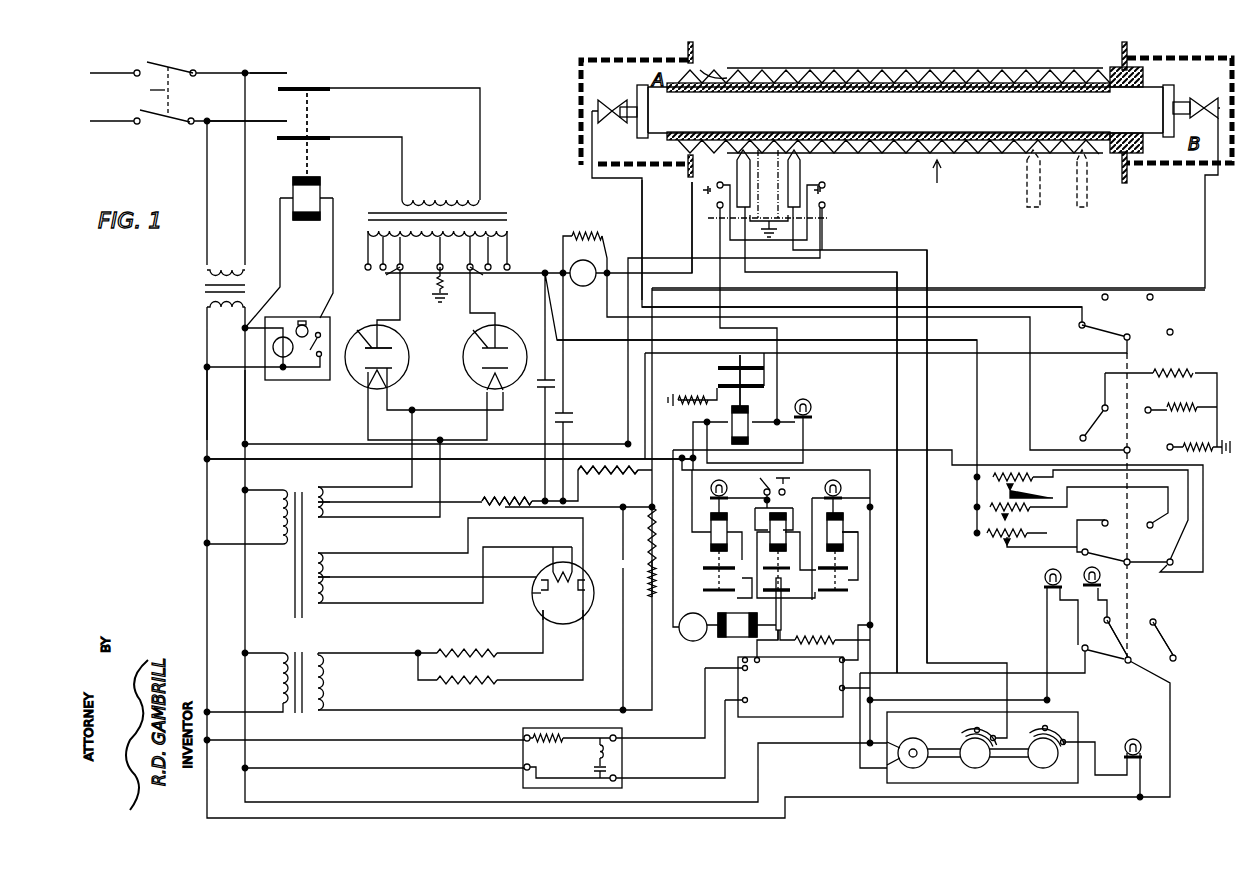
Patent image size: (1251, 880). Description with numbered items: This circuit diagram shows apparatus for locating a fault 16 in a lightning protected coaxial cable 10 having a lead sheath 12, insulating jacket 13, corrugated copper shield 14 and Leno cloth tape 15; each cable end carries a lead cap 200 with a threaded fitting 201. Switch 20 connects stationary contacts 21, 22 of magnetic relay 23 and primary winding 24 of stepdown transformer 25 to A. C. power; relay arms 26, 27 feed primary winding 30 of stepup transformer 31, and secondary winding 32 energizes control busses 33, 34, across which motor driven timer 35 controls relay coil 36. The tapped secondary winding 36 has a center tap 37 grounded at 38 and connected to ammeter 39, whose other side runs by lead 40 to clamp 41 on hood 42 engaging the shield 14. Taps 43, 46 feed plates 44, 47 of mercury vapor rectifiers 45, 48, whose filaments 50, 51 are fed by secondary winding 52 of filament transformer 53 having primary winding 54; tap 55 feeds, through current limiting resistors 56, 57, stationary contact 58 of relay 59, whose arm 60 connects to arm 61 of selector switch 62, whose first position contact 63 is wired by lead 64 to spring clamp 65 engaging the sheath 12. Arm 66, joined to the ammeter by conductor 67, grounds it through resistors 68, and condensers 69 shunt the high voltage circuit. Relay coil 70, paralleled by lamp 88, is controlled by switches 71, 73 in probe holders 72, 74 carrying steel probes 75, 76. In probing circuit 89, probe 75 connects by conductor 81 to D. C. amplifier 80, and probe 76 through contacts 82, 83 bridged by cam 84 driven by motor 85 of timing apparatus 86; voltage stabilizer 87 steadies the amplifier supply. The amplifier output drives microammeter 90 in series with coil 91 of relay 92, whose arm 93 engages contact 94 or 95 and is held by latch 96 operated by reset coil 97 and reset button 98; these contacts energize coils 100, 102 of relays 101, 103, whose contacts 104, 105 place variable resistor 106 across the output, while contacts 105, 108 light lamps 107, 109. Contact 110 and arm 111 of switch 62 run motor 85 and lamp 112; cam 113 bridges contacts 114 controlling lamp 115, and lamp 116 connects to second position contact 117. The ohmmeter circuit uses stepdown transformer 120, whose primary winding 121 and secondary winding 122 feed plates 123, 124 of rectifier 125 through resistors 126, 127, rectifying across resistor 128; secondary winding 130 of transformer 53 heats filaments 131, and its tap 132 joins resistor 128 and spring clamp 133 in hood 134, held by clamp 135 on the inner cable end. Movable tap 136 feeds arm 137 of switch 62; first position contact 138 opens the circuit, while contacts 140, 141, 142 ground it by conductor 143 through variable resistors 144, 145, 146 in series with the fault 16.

The tube 10 is at (905, 145).
The piston 12 is at (640, 105).
The tube wall 13 is at (790, 84).
The gasket 14 is at (722, 78).
The insulating coating 15 is at (880, 70).
The end cap 16 is at (1058, 150).
The main switch 20 is at (166, 92).
The supply line 21 is at (283, 73).
The supply line 22 is at (286, 122).
The relay 23 is at (330, 109).
The transformer primary 24 is at (208, 270).
The transformer 25 is at (195, 293).
The relay contact 26 is at (330, 86).
The relay contact 27 is at (317, 140).
The transformer primary 30 is at (481, 196).
The transformer 31 is at (507, 214).
The transformer secondary 32 is at (210, 307).
The lead 33 is at (243, 402).
The lead 34 is at (205, 386).
The motor unit 35 is at (300, 380).
The solenoid / secondary 36 is at (296, 190).
The center tap 37 is at (425, 280).
The ground 38 is at (433, 297).
The ammeter 39 is at (592, 252).
The lead 40 is at (691, 248).
The flange 41 is at (697, 52).
The end housing 42 is at (575, 82).
The tap switch 43 is at (377, 276).
The grid 44 is at (358, 332).
The rectifier tube 45 is at (394, 350).
The tap switch 46 is at (483, 283).
The grid 47 is at (478, 338).
The rectifier tube 48 is at (512, 345).
The cathode 50 is at (388, 382).
The cathode 51 is at (488, 380).
The secondary winding 52 is at (320, 487).
The transformer 53 is at (292, 582).
The primary winding 54 is at (282, 535).
The winding tap 55 is at (324, 510).
The resistor 56 is at (507, 498).
The resistor 57 is at (590, 464).
The contact 58 is at (716, 367).
The relay armature 59 is at (752, 397).
The contact 60 is at (742, 364).
The switch contact 61 is at (1100, 334).
The switch assembly 62 is at (1156, 606).
The switch blade 63 is at (1079, 326).
The lead 64 is at (641, 202).
The valve 65 is at (605, 100).
The switch blade 66 is at (1090, 446).
The lead 67 is at (1001, 310).
The resistor 68 is at (1178, 370).
The capacitor 69 is at (556, 385).
The relay coil 70 is at (752, 430).
The lead 71 is at (706, 187).
The link 72 is at (704, 218).
The switch 73 is at (830, 200).
The switch 74 is at (822, 182).
The electrode 75 is at (735, 160).
The electrode 76 is at (804, 160).
The D.C. amplifier 80 is at (757, 717).
The lead 81 is at (896, 405).
The contact arm 82 is at (995, 733).
The contact 83 is at (973, 728).
The cam 84 is at (975, 768).
The drive 85 is at (913, 768).
The cam unit 86 is at (1010, 783).
The filter unit 87 is at (523, 784).
The lamp 88 is at (812, 405).
The lead 89 is at (929, 397).
The ammeter 90 is at (688, 640).
The relay 91 is at (730, 637).
The contact 92 is at (800, 590).
The lead 93 is at (778, 640).
The armature 94 is at (782, 615).
The contact 95 is at (765, 588).
The relay 96 is at (779, 540).
The relay coil 97 is at (779, 520).
The switch 98 is at (762, 479).
The relay 100 is at (720, 530).
The relay coil 101 is at (708, 522).
The relay coil 102 is at (845, 526).
The relay 103 is at (850, 555).
The contact 104 is at (708, 590).
The contact 105 is at (836, 580).
The resistor / contact 106 is at (703, 572).
The lamp 107 is at (728, 493).
The contact 108 is at (845, 572).
The lamp 109 is at (842, 486).
The switch contact 110 is at (1081, 650).
The switch blade 111 is at (1125, 663).
The lamp 112 is at (1044, 577).
The cam 113 is at (1043, 768).
The contact arm 114 is at (1050, 731).
The lamp 115 is at (1138, 742).
The lamp 116 is at (1102, 577).
The switch blade 117 is at (1116, 636).
The transformer 120 is at (296, 715).
The primary winding 121 is at (292, 648).
The secondary winding 122 is at (320, 710).
The tube terminal 123 is at (541, 612).
The tube terminal 124 is at (583, 613).
The tube terminal 125 is at (534, 590).
The resistor 126 is at (460, 652).
The resistor 127 is at (460, 683).
The resistor tap 128 is at (652, 573).
The secondary winding 130 is at (318, 605).
The tube heater 131 is at (570, 560).
The winding tap 132 is at (330, 585).
The valve 133 is at (1207, 98).
The end housing 134 is at (1168, 166).
The flange 135 is at (1121, 54).
The resistor 136 is at (650, 556).
The switch contact 137 is at (1101, 557).
The switch blade 138 is at (1081, 552).
The contact 140 is at (1105, 519).
The contact 141 is at (1151, 521).
The contact 142 is at (1172, 558).
The lead 143 is at (840, 340).
The potentiometer 144 is at (985, 535).
The potentiometer 145 is at (990, 505).
The potentiometer 146 is at (1003, 474).
The piston head 200 is at (648, 132).
The piston rod 201 is at (625, 117).